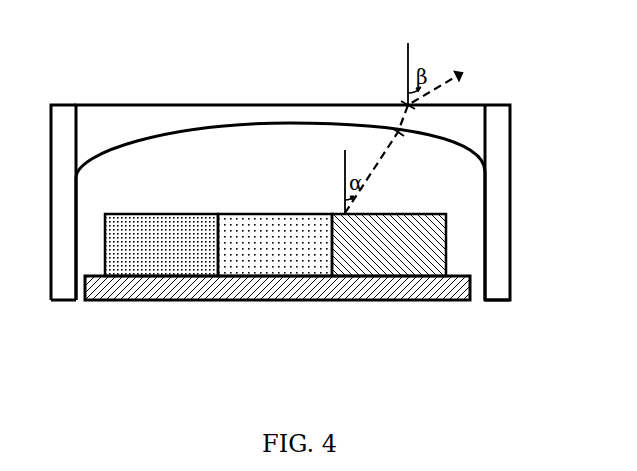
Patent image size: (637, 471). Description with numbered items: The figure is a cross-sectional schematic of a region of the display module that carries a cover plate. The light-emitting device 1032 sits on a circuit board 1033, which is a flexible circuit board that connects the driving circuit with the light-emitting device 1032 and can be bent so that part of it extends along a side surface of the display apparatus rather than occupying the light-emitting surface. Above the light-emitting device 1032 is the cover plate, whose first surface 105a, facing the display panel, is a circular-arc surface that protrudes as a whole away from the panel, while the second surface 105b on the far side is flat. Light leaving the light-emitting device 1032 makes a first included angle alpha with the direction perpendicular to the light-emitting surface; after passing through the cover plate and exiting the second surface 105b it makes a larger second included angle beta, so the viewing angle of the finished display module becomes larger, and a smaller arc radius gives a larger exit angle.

The second surface 105b is at (113, 105).
The first surface 105a is at (247, 125).
The light-emitting device 1032 is at (155, 262).
The circuit board 1033 is at (425, 289).